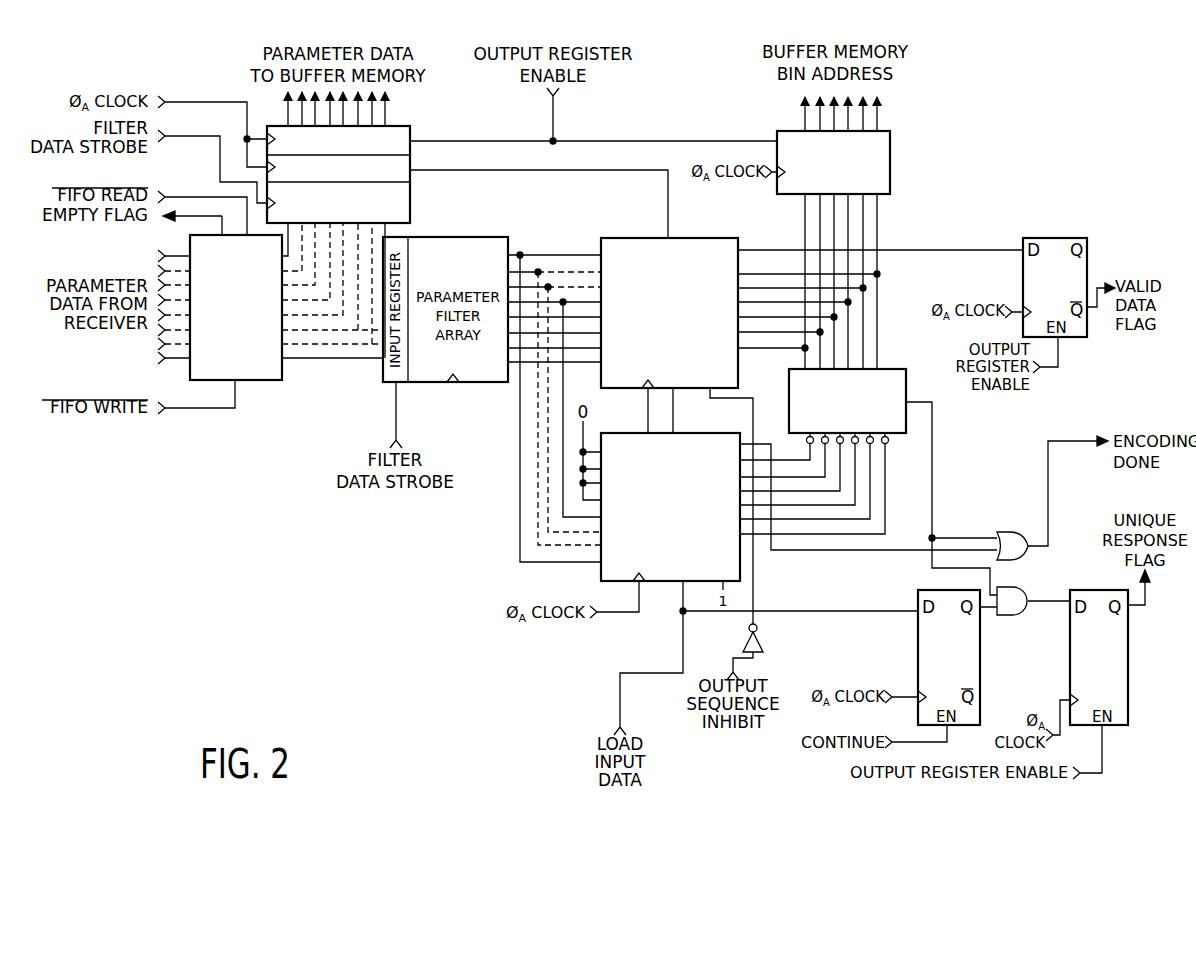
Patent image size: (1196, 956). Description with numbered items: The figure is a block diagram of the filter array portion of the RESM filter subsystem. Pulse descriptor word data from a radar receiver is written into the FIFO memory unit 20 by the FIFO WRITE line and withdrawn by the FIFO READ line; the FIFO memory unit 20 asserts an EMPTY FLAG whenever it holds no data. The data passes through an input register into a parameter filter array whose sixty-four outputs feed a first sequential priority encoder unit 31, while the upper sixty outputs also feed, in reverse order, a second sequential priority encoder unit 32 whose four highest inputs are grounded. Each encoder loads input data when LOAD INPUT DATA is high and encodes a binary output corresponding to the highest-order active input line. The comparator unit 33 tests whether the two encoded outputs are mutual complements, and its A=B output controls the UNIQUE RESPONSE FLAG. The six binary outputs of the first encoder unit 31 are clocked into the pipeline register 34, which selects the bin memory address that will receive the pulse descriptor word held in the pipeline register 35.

The FIFO memory unit 20 is at (272, 382).
The first sequential priority encoder unit 31 is at (652, 237).
The second sequential priority encoder unit 32 is at (655, 582).
The comparator unit 33 is at (905, 436).
The pipeline register 34 is at (893, 148).
The pipeline register 35 is at (412, 194).